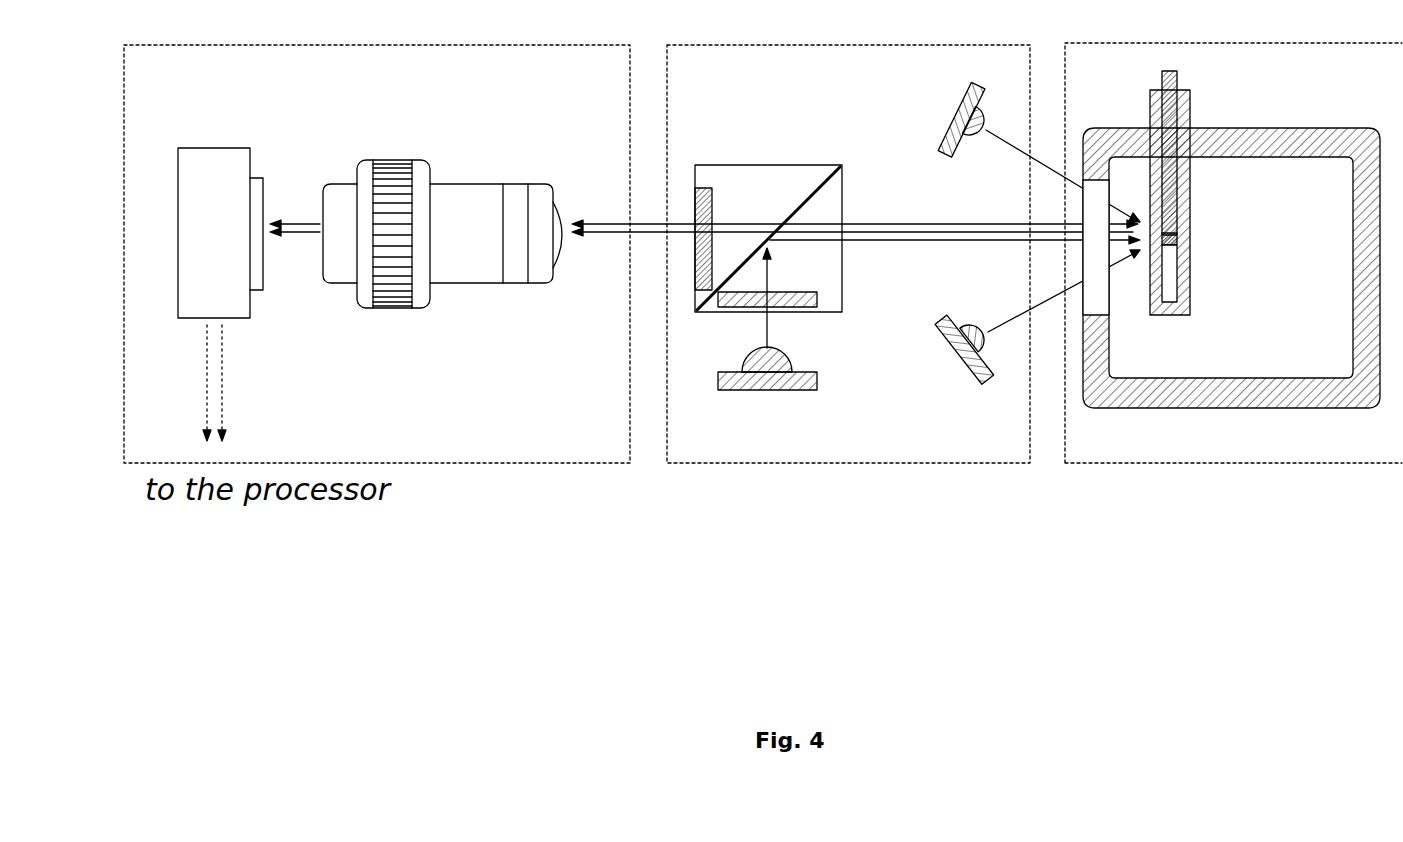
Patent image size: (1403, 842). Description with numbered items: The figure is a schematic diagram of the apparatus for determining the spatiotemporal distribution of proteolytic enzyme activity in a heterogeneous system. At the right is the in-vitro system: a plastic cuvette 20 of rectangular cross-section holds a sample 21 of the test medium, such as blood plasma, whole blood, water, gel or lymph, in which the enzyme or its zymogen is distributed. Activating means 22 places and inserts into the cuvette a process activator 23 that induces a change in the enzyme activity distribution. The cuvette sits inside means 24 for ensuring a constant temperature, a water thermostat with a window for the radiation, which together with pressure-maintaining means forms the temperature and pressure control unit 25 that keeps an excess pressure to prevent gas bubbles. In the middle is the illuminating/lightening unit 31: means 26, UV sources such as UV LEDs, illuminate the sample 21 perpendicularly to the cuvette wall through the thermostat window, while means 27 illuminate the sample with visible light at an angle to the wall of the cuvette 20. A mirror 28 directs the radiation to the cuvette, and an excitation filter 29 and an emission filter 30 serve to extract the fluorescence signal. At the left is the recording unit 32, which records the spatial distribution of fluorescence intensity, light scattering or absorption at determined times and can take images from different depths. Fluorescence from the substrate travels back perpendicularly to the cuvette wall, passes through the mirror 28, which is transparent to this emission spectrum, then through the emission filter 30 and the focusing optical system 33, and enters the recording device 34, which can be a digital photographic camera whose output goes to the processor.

The cuvette 20 is at (1190, 130).
The sample 21 is at (1180, 268).
The activating means 22 is at (1175, 72).
The process activator 23 is at (1172, 233).
The means for ensuring a constant temperature 24 is at (1290, 140).
The temperature and pressure control unit 25 is at (1150, 452).
The means for illuminating sample with exciting radiation 26 is at (768, 390).
The means for illuminating with visible light 27 is at (955, 112).
The mirror 28 is at (830, 182).
The excitation filter 29 is at (815, 307).
The emission filter 30 is at (712, 190).
The illuminating/lightening unit 31 is at (845, 452).
The recording unit 32 is at (527, 452).
The optical system 33 is at (425, 160).
The recording device 34 is at (252, 148).